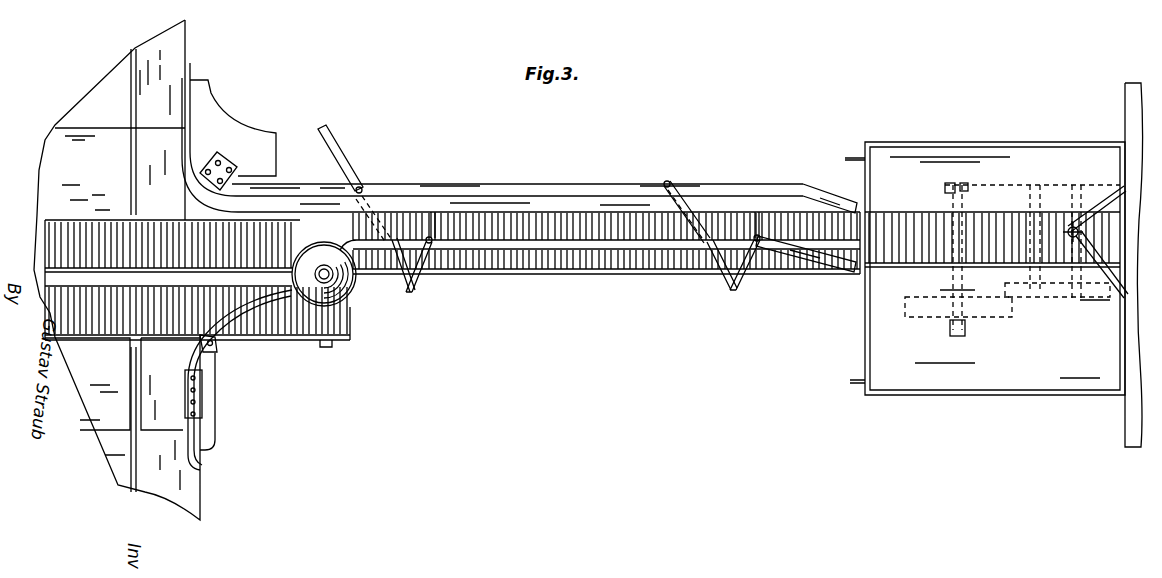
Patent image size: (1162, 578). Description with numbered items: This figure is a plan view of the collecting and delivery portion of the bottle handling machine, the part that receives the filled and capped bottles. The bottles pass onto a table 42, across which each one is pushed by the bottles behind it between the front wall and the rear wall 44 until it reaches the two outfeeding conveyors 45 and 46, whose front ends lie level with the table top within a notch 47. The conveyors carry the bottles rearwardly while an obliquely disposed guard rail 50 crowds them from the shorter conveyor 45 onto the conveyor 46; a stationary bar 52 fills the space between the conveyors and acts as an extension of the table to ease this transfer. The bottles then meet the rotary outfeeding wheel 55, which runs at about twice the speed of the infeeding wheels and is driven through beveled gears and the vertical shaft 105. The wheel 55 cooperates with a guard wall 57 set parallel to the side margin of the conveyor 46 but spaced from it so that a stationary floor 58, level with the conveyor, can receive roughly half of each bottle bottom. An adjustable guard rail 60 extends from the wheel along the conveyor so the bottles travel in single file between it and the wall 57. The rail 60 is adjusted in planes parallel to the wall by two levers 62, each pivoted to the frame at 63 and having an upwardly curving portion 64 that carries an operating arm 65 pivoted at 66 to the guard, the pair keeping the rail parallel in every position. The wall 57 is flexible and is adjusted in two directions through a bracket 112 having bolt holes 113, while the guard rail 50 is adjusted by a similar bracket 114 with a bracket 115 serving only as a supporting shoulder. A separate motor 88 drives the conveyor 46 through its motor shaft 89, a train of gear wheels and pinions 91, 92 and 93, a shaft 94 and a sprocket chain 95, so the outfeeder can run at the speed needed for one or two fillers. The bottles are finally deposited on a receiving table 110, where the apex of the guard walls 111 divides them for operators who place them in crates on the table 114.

The table 42 is at (112, 414).
The rear wall 44 is at (135, 372).
The outfeeding conveyor 45 is at (119, 330).
The outfeeding conveyor 46 is at (85, 232).
The notch 47 is at (66, 347).
The guard rail 50 is at (284, 338).
The stationary bar 52 is at (168, 278).
The rotary feeding member or wheel 55 is at (351, 306).
The guard rail or wall 57 is at (200, 195).
The stationary bar or floor 58 is at (598, 207).
The adjustable guard rail 60 is at (578, 262).
The lever 62 is at (345, 167).
The pivot 63 is at (393, 268).
The upwardly curving portion 64 is at (745, 292).
The operating arm 65 is at (424, 262).
The pivot 66 is at (433, 222).
The motor 88 is at (913, 280).
The motor shaft 89 is at (958, 282).
The gear wheel 91 is at (938, 310).
The gear wheel 92 is at (943, 188).
The gear wheel 93 is at (993, 188).
The shaft 94 is at (1036, 275).
The sprocket chain 95 is at (1082, 294).
The vertical shaft 105 is at (324, 274).
The receiving table 110 is at (985, 268).
The guard wall 111 is at (1082, 170).
The bracket 112 is at (223, 163).
The bolt hole 113 is at (228, 168).
The bracket 114 is at (204, 405).
The bracket 115 is at (216, 346).